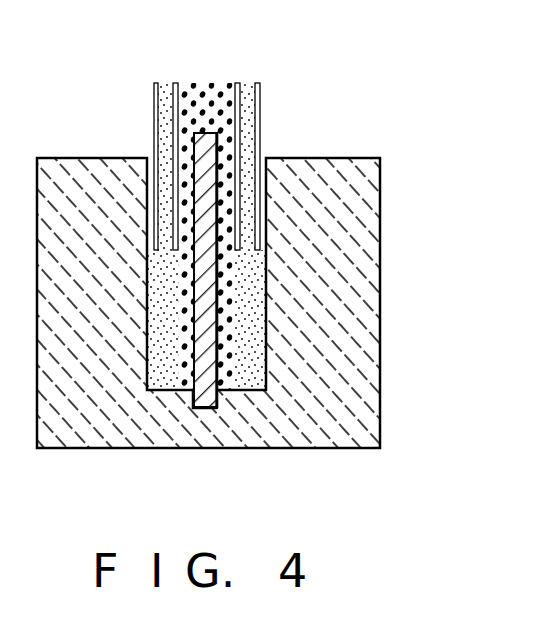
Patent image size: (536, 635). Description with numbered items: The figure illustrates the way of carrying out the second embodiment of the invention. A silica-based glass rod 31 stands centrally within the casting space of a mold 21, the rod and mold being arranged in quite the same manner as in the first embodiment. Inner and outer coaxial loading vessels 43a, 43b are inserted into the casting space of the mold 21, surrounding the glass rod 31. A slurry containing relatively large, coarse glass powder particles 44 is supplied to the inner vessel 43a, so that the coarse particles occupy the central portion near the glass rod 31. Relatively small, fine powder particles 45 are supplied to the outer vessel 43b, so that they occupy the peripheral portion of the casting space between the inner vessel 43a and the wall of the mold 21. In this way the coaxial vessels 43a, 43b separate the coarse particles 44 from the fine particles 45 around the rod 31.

The mold 21 is at (383, 200).
The silica-based glass rod 31 is at (205, 408).
The inner loading vessel 43a is at (177, 82).
The outer loading vessel 43b is at (153, 113).
The coarse glass powder particles 44 is at (220, 82).
The fine powder particles 45 is at (163, 82).